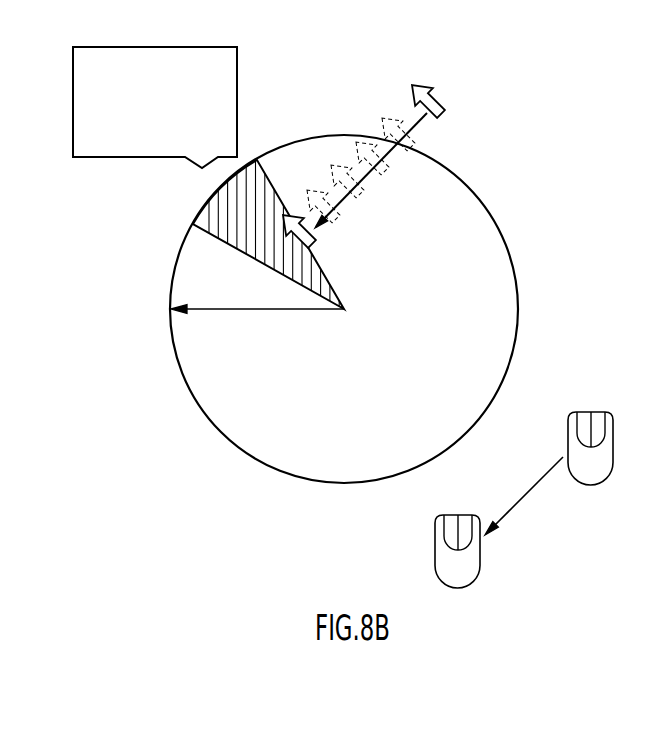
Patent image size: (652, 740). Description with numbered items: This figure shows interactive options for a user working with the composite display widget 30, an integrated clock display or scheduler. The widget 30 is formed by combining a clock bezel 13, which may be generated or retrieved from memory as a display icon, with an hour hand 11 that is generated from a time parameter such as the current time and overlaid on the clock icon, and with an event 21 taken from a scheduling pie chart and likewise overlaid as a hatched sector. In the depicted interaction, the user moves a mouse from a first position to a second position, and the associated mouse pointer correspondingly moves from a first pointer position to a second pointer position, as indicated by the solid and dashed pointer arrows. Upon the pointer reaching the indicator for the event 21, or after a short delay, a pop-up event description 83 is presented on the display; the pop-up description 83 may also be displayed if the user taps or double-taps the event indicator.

The pop-up event description 83 is at (110, 47).
The event 21 is at (205, 222).
The hour hand 11 is at (267, 312).
The clock bezel 13 is at (213, 425).
The composite display widget 30 is at (528, 168).